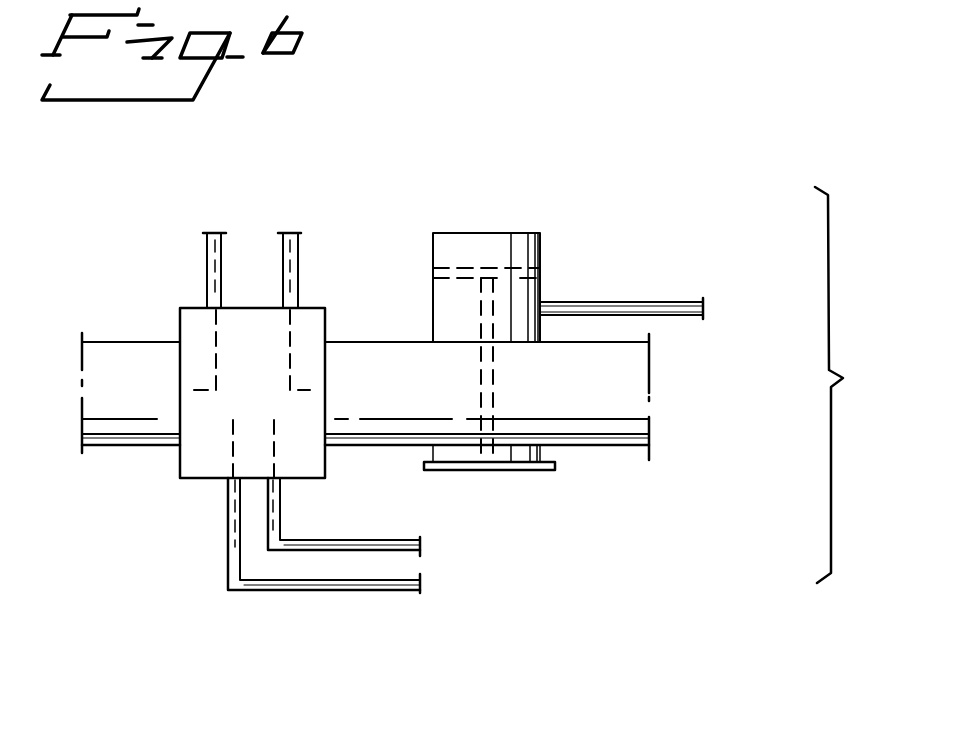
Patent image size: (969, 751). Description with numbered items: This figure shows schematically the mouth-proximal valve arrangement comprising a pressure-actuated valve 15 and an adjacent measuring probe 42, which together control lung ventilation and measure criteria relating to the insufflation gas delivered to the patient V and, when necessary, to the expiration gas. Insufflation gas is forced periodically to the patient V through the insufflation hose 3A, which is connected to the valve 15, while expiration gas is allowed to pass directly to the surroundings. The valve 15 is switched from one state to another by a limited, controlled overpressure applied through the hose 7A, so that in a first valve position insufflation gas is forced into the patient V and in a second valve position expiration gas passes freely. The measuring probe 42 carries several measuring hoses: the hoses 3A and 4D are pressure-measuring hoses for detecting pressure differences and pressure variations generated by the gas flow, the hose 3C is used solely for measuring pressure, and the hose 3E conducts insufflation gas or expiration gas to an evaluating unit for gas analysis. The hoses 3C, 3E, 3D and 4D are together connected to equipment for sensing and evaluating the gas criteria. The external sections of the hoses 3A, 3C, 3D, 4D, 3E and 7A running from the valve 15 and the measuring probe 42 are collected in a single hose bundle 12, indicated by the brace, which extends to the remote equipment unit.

The hose bundle 12 is at (854, 385).
The measuring probe 42 is at (173, 460).
The pressure-actuated valve 15 is at (533, 228).
The hose 3D is at (210, 255).
The pressure-measuring hose 4D is at (298, 253).
The control hose 7A is at (622, 307).
The insufflation hose 3A is at (613, 427).
The gas analysis hose 3E is at (367, 543).
The pressure-measuring hose 3C is at (382, 592).
The patient V is at (46, 378).